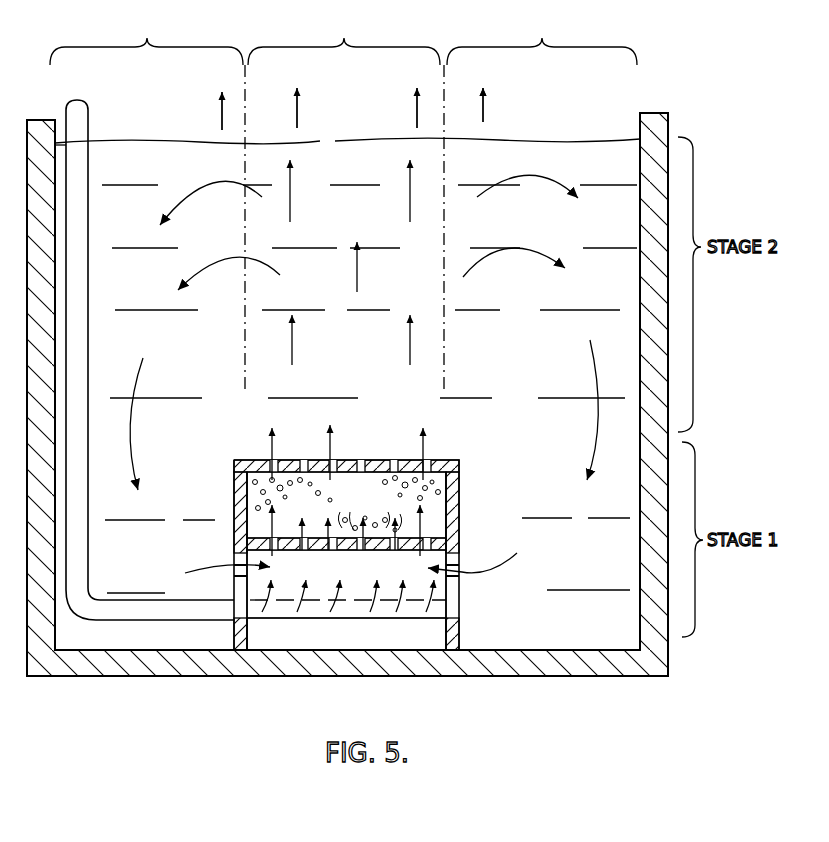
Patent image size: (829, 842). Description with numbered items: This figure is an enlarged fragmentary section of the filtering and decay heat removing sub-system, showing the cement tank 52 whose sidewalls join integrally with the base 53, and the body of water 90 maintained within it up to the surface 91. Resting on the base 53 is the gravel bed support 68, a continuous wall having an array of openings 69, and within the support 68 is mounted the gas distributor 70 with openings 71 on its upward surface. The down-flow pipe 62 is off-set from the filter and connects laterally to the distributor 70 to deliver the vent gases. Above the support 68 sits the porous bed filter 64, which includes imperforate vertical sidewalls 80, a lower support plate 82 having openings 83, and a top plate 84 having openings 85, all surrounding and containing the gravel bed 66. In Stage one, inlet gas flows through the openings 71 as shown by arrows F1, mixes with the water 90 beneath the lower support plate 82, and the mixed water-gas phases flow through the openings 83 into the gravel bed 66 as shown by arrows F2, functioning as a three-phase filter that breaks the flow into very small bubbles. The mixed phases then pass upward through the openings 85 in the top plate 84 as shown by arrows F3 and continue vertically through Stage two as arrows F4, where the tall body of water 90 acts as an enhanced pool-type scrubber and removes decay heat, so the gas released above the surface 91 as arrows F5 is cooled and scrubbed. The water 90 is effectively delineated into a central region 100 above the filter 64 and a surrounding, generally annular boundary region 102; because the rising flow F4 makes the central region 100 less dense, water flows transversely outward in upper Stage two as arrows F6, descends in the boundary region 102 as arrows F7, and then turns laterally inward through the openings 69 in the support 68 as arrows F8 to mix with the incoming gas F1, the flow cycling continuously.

The cement tank 52 is at (598, 686).
The base 53 is at (583, 650).
The down-flow pipe 62 is at (84, 122).
The surface of the water 91 is at (562, 140).
The body of water 90 is at (604, 235).
The boundary region 102 is at (343, 200).
The central region 100 is at (344, 37).
The porous bed filter 64 is at (253, 458).
The top plate 84 is at (372, 460).
The openings in top plate 85 is at (395, 460).
The vertical sidewalls 80 is at (236, 493).
The gravel bed 66 is at (368, 501).
The lower support plate 82 is at (450, 538).
The openings in lower support plate 83 is at (403, 538).
The openings in support 69 is at (236, 572).
The gravel bed support 68 is at (238, 628).
The openings of gas distributor 71 is at (330, 602).
The gas distributor 70 is at (421, 620).
The inlet gas flow arrows F1 is at (348, 593).
The mixed water-gas flow arrows F2 is at (346, 530).
The upward flow arrows through top plate F3 is at (364, 452).
The upward flow arrows in Stage 2 F4 is at (364, 262).
The released gas flow arrows F5 is at (355, 109).
The transverse flow arrows F6 is at (369, 222).
The down-flow arrows F7 is at (364, 415).
The inward return flow arrows F8 is at (351, 557).